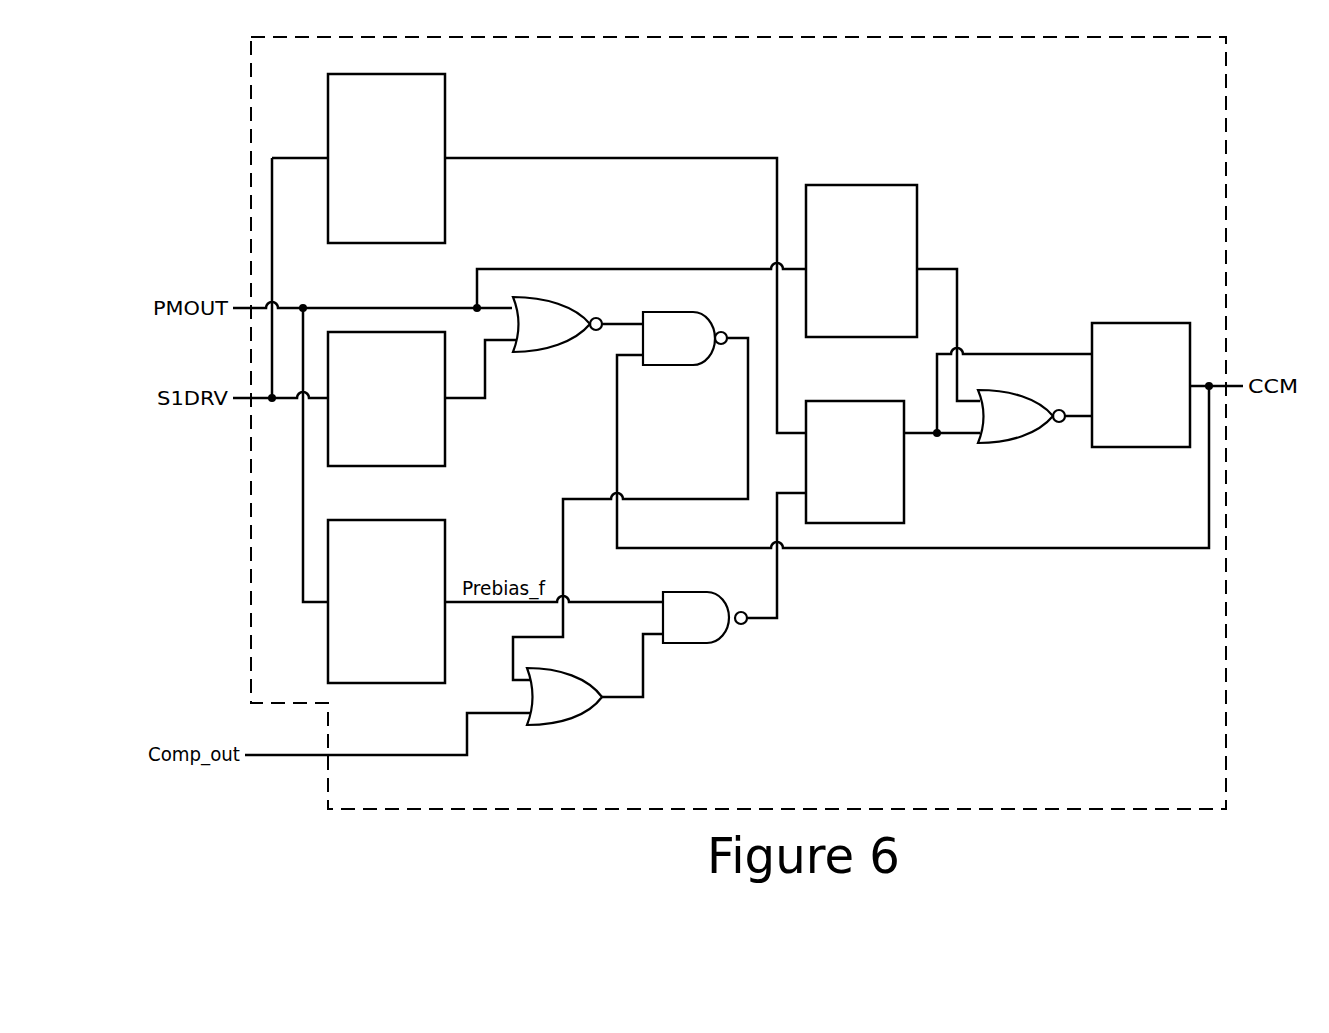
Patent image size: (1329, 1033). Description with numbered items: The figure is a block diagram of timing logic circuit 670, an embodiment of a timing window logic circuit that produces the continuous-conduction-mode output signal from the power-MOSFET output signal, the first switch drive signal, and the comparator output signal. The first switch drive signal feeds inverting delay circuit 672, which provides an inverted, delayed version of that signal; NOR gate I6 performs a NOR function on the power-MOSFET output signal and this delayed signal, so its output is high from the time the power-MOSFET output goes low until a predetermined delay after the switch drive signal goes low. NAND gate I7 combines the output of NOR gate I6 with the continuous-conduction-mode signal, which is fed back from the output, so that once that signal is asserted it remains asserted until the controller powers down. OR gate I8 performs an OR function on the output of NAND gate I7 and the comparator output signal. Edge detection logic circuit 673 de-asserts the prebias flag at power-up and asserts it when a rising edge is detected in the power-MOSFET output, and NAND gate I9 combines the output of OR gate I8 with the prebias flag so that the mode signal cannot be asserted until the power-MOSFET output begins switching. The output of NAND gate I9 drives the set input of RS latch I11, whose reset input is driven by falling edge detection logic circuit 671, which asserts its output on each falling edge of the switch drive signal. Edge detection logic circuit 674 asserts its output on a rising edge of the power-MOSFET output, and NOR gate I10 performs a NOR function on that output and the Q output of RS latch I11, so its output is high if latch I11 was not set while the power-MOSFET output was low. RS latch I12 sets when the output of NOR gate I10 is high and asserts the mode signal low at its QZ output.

The timing logic circuit 670 is at (1191, 85).
The falling edge detection logic circuit 671 is at (371, 233).
The inverting delay circuit 672 is at (371, 453).
The edge detection logic circuit 673 is at (371, 672).
The edge detection logic circuit 674 is at (846, 325).
The NOR gate I6 is at (557, 336).
The NAND gate I7 is at (685, 352).
The OR gate I8 is at (564, 710).
The NAND gate I9 is at (705, 629).
The NOR gate I10 is at (1021, 431).
The RS latch I11 is at (855, 462).
The RS latch I12 is at (1141, 385).